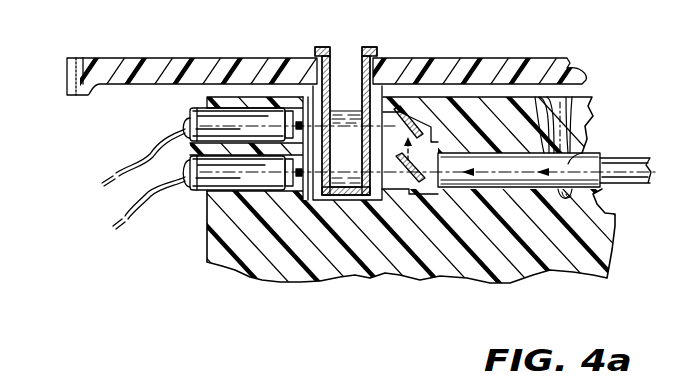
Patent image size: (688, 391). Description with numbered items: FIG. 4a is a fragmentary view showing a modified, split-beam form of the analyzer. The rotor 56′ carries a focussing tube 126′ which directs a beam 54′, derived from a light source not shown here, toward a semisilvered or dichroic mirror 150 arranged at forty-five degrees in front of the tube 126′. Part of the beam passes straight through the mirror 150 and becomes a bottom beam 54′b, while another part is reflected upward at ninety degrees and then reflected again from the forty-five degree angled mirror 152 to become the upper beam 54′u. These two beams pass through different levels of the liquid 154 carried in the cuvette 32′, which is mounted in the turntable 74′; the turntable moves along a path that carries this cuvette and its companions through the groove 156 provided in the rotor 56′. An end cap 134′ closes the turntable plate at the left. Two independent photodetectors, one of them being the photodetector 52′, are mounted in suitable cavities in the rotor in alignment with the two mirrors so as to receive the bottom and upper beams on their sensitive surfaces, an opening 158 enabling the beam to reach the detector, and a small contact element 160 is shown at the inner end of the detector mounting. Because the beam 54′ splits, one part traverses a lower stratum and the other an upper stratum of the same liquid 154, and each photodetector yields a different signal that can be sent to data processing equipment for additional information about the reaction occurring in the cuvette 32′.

The end cap of cover plate 134′ is at (73, 60).
The turntable 74′ is at (207, 62).
The contact 160 is at (301, 118).
The cuvette 32′ is at (337, 76).
The liquid 154 is at (352, 188).
The angled mirror 152 is at (412, 118).
The beam 54′ is at (578, 155).
The photodetector 52′ is at (206, 187).
The rotor 56′ is at (214, 265).
The opening 158 is at (237, 243).
The upper beam 54′u is at (303, 195).
The bottom beam 54′b is at (336, 198).
The groove 156 is at (347, 210).
The semisilvered or dichroic mirror 150 is at (423, 198).
The focussing tube 126′ is at (517, 97).